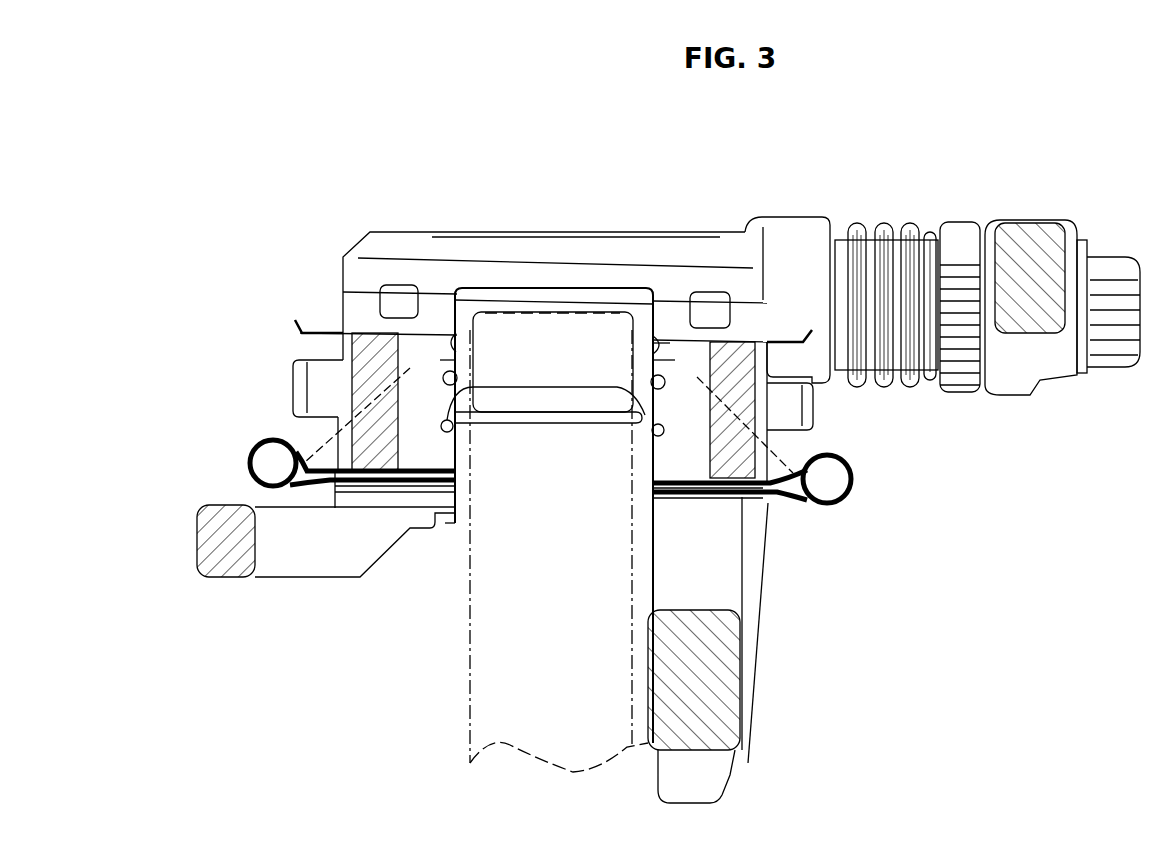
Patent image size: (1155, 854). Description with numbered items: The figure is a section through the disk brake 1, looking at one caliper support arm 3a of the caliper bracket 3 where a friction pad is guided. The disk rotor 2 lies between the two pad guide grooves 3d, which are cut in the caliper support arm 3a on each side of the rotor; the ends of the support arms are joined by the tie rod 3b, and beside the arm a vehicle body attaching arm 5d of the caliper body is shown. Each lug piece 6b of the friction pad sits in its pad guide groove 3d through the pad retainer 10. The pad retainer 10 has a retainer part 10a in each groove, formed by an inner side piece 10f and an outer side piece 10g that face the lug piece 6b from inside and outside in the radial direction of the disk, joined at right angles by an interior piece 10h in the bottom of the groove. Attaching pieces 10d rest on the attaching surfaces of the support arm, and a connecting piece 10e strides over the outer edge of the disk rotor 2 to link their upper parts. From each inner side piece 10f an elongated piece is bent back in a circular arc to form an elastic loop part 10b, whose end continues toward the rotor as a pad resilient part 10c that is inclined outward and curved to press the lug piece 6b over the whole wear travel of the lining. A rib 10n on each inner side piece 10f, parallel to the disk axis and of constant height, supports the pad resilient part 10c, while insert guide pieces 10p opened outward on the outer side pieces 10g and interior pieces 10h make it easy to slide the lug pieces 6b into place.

The disk brake 1 is at (651, 148).
The disk rotor 2 is at (478, 665).
The caliper bracket 3 is at (765, 653).
The caliper support arm 3a is at (795, 225).
The tie rod 3b is at (230, 568).
The pad guide groove 3d is at (466, 443).
The vehicle body attaching arm 5d is at (1032, 232).
The lug piece 6b is at (352, 392).
The pad retainer 10 is at (405, 226).
The retainer part 10a is at (330, 355).
The elastic loop part 10b is at (250, 460).
The pad resilient part 10c is at (445, 467).
The attaching piece 10d is at (368, 290).
The connecting piece 10e is at (547, 247).
The inner side piece 10f is at (420, 492).
The outer side piece 10g is at (460, 343).
The interior piece 10h is at (463, 378).
The rib 10n is at (408, 470).
The insert guide piece 10p is at (297, 320).